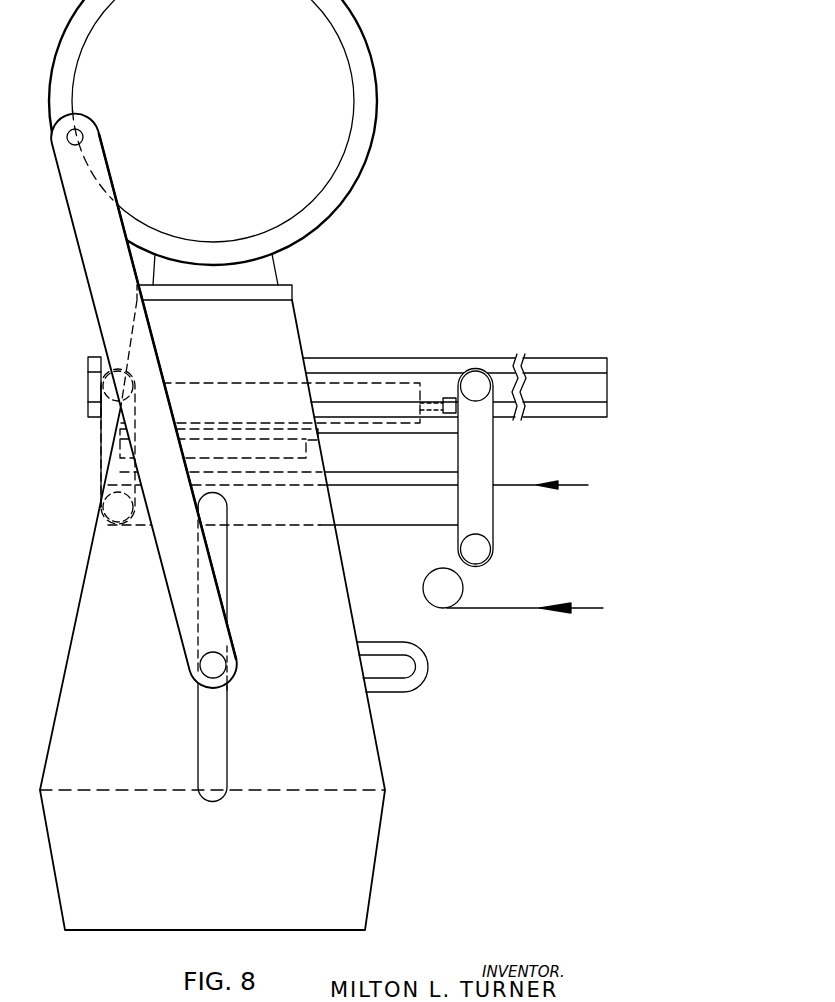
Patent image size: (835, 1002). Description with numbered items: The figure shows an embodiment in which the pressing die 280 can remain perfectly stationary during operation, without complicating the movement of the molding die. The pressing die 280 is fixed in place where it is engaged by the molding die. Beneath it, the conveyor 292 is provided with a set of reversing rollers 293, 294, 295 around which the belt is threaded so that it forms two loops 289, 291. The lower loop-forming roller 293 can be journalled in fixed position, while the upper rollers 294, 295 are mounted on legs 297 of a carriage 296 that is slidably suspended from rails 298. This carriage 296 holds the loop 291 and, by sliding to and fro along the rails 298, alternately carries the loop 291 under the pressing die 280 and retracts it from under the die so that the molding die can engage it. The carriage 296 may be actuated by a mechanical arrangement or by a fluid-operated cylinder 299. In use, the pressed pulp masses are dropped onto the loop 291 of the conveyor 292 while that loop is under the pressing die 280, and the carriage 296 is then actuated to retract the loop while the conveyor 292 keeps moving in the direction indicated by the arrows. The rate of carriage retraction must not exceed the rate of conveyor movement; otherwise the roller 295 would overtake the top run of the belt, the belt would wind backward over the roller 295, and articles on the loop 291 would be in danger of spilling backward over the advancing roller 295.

The pressing die 280 is at (306, 457).
The loop 289 is at (458, 610).
The loop 291 is at (355, 527).
The conveyor 292 is at (551, 605).
The lower loop-forming roller 293 is at (464, 588).
The upper roller 294 is at (457, 556).
The upper roller 295 is at (132, 533).
The carriage 296 is at (417, 473).
The legs 297 is at (494, 450).
The rails 298 is at (550, 358).
The fluid-operated cylinder 299 is at (405, 382).